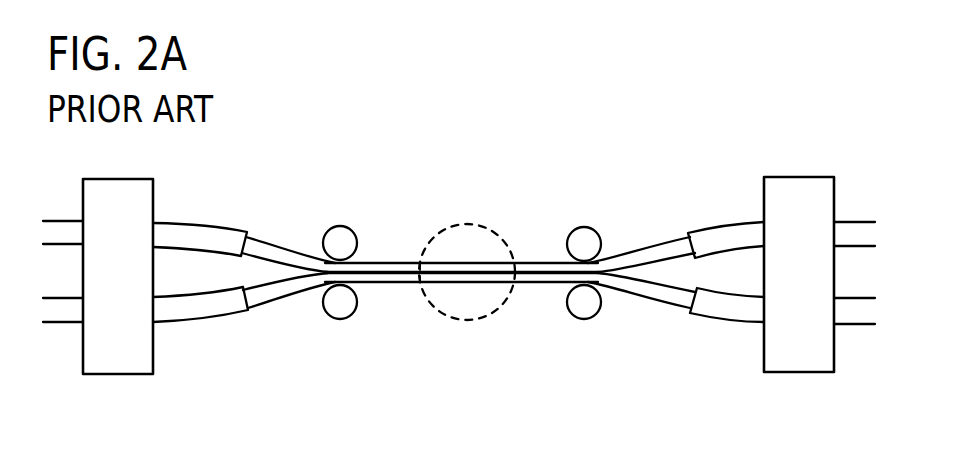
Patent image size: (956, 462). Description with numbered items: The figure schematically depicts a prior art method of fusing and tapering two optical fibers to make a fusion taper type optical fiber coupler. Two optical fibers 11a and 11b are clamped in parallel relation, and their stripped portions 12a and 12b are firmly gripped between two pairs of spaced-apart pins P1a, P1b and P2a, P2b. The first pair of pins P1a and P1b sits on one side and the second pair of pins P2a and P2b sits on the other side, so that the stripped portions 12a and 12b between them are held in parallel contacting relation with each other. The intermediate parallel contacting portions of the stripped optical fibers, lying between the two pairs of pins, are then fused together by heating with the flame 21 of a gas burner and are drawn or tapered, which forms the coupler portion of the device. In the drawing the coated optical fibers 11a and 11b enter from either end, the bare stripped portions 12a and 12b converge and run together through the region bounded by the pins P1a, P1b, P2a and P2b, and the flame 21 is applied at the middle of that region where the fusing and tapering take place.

The optical fiber 11a is at (212, 225).
The optical fiber 11b is at (213, 320).
The stripped portion 12a is at (285, 250).
The stripped portion 12b is at (282, 297).
The pin P1a is at (347, 227).
The pin P1b is at (346, 319).
The pin P2a is at (589, 228).
The pin P2b is at (589, 319).
The flame 21 is at (478, 222).